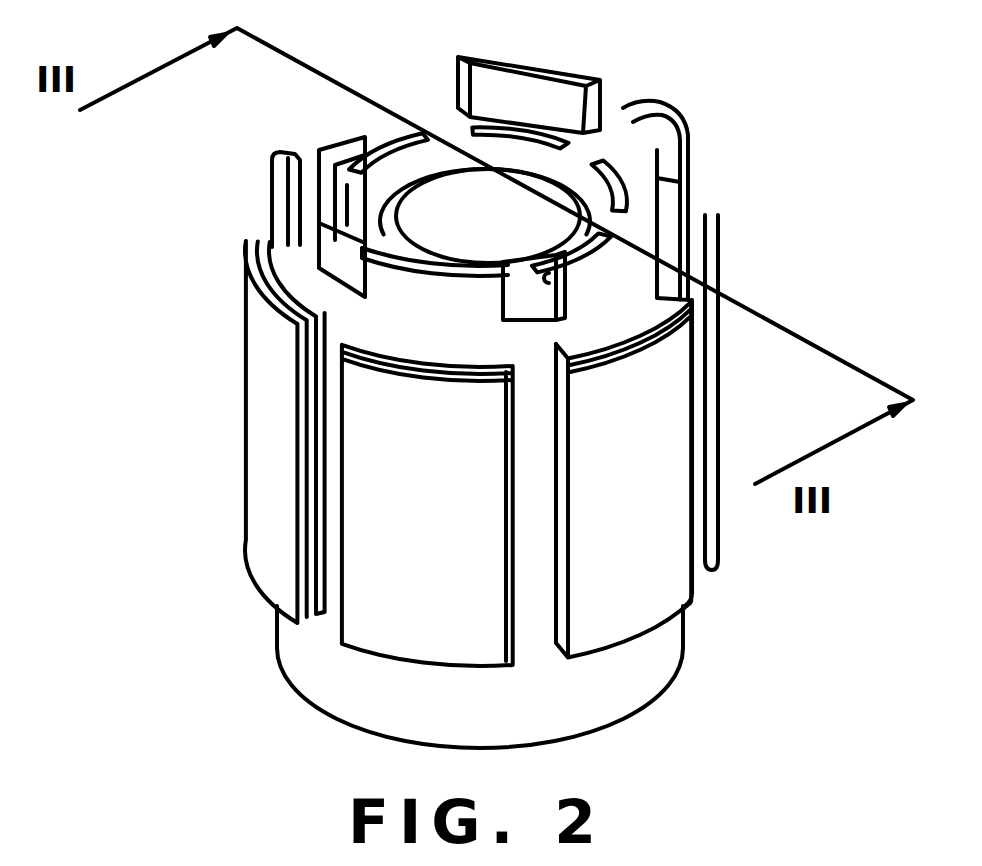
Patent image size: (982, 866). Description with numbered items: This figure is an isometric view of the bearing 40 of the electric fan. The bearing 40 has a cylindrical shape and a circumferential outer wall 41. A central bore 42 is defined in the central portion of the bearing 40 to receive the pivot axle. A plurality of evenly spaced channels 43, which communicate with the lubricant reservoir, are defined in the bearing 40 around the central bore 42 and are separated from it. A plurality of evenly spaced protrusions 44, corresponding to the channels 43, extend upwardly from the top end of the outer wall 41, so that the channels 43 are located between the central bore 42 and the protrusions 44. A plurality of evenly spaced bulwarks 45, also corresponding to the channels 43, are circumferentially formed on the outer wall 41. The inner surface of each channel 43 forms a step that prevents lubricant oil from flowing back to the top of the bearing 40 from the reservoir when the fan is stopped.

The bearing 40 is at (700, 120).
The outer wall 41 is at (605, 685).
The central bore 42 is at (440, 227).
The channels 43 is at (395, 148).
The protrusions 44 is at (517, 93).
The bulwarks 45 is at (273, 443).